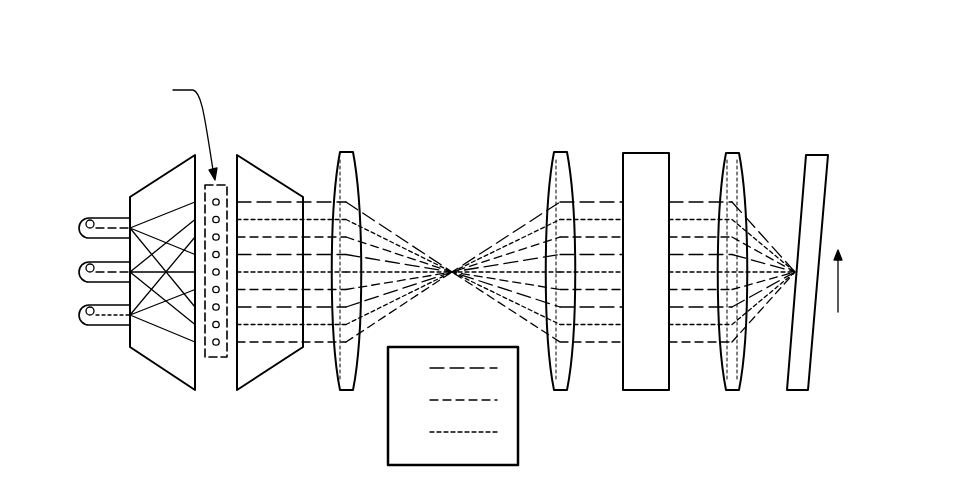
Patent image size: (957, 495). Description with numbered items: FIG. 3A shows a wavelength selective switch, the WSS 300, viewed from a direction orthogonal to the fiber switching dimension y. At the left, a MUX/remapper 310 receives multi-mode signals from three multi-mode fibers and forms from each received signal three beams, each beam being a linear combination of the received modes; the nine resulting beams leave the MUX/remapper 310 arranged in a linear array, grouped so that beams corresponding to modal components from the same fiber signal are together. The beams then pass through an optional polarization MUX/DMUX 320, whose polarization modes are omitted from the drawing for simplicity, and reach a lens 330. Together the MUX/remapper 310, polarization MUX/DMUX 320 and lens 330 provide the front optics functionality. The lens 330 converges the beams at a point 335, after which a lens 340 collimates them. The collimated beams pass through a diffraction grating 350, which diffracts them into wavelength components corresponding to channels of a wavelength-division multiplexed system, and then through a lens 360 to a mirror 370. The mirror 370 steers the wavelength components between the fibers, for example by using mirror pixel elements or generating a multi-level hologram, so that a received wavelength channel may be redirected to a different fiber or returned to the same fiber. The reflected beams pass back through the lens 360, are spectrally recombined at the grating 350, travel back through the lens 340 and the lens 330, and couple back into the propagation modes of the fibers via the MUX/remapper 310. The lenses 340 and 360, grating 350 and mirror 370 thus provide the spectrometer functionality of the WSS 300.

The WSS 300 is at (678, 56).
The MUX/remapper 310 is at (162, 177).
The polarization MUX/DMUX 320 is at (275, 174).
The lens 330 is at (343, 152).
The point 335 is at (452, 266).
The lens 340 is at (560, 152).
The diffraction grating 350 is at (648, 153).
The lens 360 is at (735, 153).
The mirror 370 is at (819, 155).